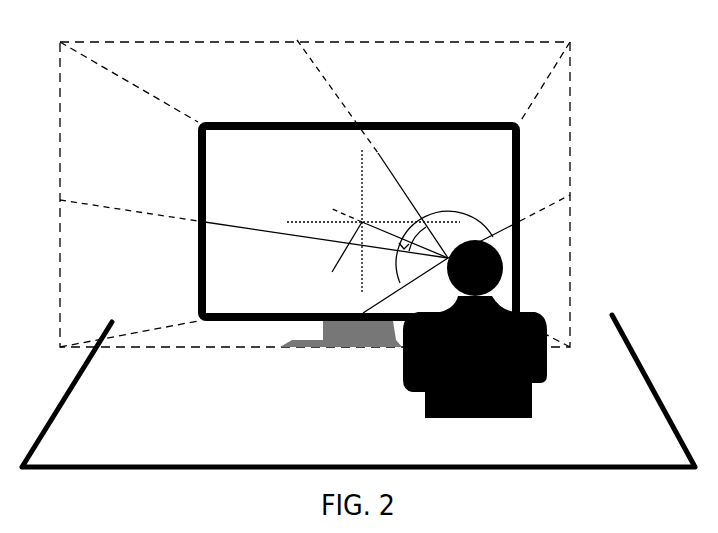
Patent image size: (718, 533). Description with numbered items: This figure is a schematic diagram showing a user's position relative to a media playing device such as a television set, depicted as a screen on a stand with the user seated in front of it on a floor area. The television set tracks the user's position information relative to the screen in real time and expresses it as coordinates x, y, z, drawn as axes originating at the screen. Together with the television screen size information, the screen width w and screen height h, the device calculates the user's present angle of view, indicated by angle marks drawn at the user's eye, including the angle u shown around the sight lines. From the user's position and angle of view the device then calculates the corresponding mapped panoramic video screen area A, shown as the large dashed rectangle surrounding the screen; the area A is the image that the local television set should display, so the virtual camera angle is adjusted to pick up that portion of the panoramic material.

The mapped panoramic video screen area A is at (315, 183).
The television screen height h is at (254, 229).
The television screen width w is at (372, 149).
The x position coordinate x is at (342, 255).
The y position coordinate y is at (373, 226).
The z position coordinate z is at (358, 215).
The viewing angle u is at (444, 243).